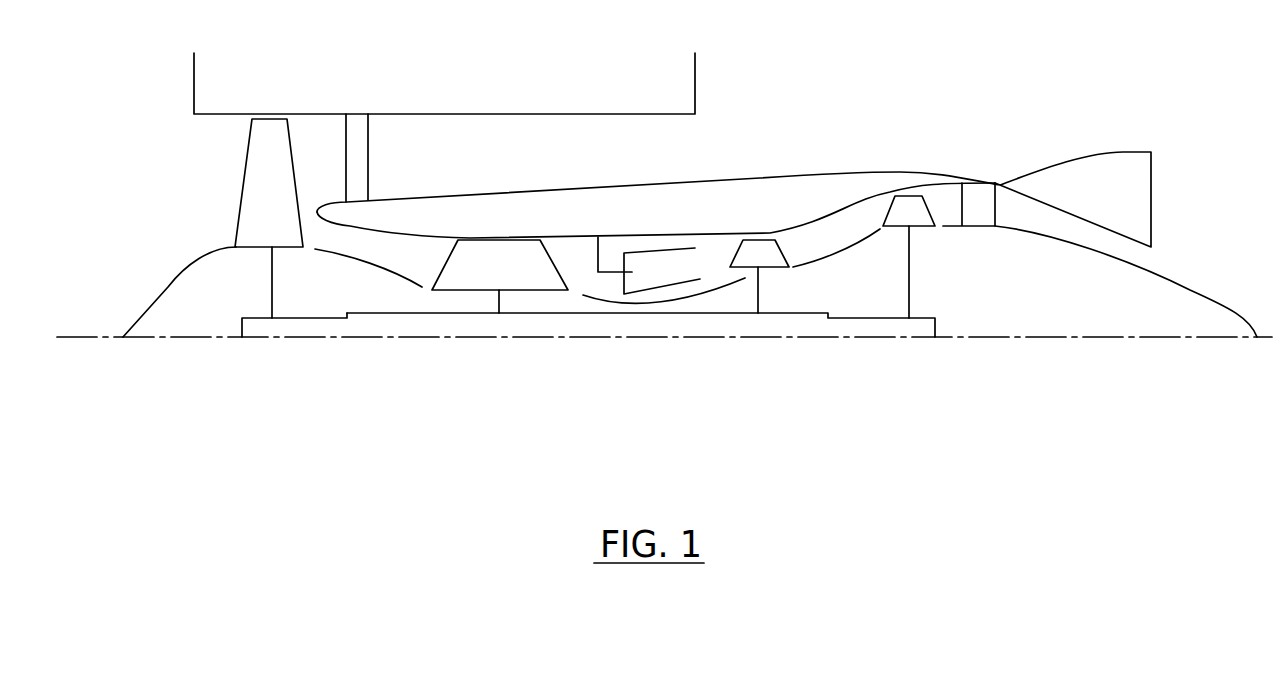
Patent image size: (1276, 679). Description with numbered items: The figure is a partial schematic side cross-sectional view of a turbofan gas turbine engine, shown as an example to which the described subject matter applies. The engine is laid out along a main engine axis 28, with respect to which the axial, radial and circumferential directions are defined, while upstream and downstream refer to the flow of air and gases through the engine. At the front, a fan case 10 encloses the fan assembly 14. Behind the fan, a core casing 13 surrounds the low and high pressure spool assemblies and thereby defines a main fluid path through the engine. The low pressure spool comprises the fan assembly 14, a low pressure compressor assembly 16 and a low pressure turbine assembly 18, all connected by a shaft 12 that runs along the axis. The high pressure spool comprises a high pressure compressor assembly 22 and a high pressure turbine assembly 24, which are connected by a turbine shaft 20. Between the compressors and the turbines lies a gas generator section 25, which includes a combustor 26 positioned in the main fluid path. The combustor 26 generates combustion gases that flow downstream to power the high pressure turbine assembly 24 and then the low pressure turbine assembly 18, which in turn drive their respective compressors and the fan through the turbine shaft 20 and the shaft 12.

The fan case 10 is at (530, 114).
The shaft 12 is at (261, 328).
The core casing 13 is at (755, 177).
The fan assembly 14 is at (267, 135).
The forward mount region 16 is at (327, 282).
The low pressure turbine assembly 18 is at (909, 283).
The turbine shaft 20 is at (700, 327).
The high pressure compressor assembly 22 is at (482, 279).
The high pressure turbine assembly 24 is at (772, 262).
The gas generator section 25 is at (613, 289).
The combustor 26 is at (650, 273).
The main engine axis 28 is at (86, 337).